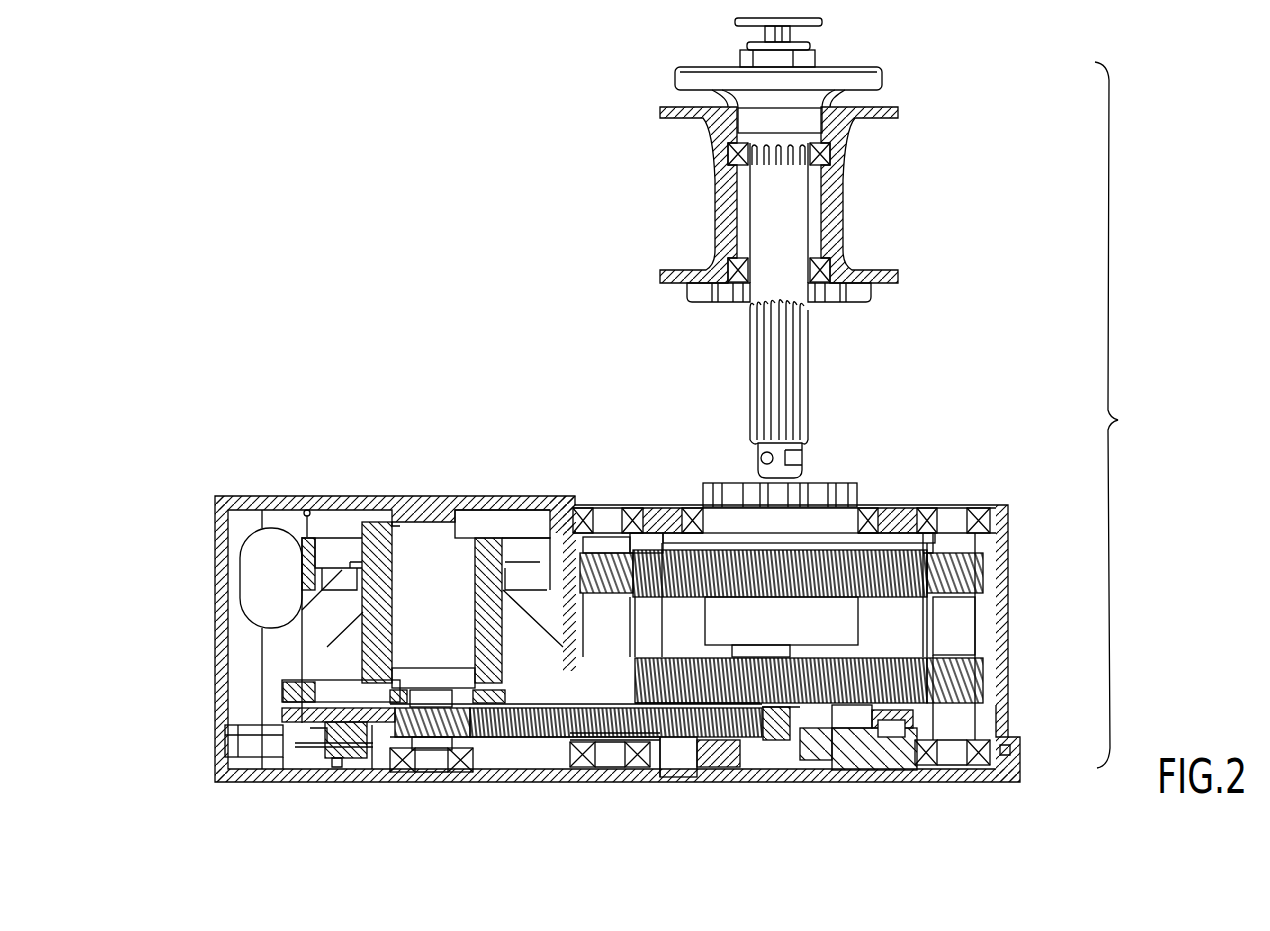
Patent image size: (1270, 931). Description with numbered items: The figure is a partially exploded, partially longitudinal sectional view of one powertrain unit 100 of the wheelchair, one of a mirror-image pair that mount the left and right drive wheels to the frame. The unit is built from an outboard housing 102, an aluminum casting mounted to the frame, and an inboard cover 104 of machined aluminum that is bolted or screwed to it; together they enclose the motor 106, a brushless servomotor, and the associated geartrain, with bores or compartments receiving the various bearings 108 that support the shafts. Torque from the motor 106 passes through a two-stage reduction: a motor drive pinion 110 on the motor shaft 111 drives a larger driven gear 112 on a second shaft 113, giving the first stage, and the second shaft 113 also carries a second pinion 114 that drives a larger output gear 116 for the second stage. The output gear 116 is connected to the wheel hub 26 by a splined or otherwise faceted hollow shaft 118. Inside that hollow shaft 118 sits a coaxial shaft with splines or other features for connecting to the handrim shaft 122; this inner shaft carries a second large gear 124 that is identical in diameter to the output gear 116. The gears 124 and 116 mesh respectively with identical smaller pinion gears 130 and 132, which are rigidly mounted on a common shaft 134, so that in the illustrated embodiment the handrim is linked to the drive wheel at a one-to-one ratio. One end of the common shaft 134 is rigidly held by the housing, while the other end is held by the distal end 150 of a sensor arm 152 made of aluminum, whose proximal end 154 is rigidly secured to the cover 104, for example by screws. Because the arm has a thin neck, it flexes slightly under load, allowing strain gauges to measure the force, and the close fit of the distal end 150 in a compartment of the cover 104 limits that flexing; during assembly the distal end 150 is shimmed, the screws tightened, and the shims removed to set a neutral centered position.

The wheel hub 26 is at (837, 213).
The powertrain unit 100 is at (390, 443).
The outboard housing 102 is at (492, 510).
The inboard cover 104 is at (220, 768).
The motor 106 is at (337, 510).
The bearings 108 is at (637, 510).
The motor drive pinion 110 is at (448, 747).
The motor shaft 111 is at (427, 747).
The driven gear 112 is at (683, 735).
The second shaft 113 is at (626, 642).
The second pinion 114 is at (580, 553).
The output gear 116 is at (750, 597).
The hollow shaft 118 is at (737, 517).
The handrim shaft 122 is at (798, 285).
The second large gear 124 is at (880, 657).
The pinion gear 130 is at (985, 682).
The pinion gear 132 is at (985, 578).
The common shaft 134 is at (965, 628).
The distal end 150 is at (1003, 755).
The sensor arm 152 is at (877, 760).
The proximal end 154 is at (813, 755).